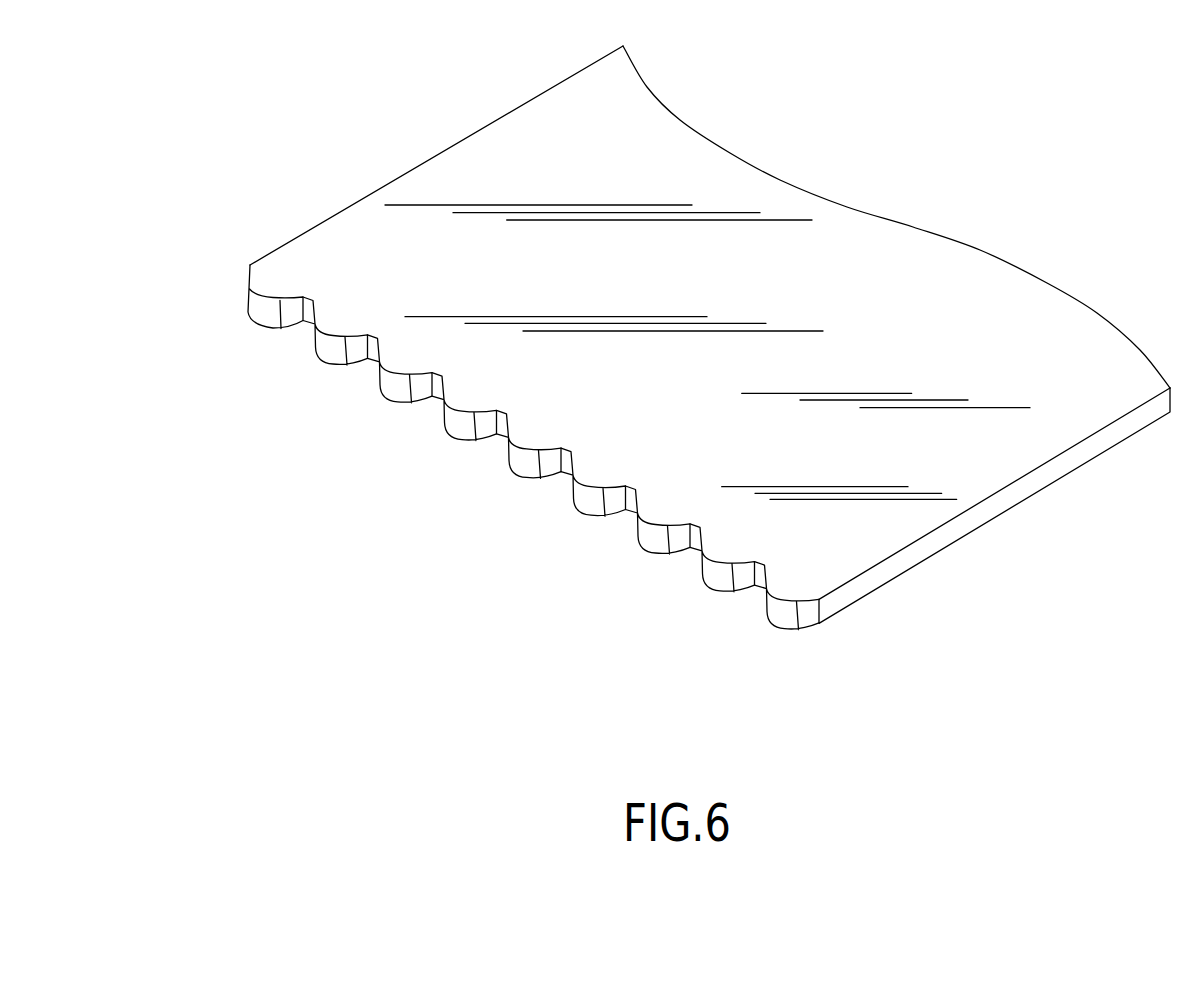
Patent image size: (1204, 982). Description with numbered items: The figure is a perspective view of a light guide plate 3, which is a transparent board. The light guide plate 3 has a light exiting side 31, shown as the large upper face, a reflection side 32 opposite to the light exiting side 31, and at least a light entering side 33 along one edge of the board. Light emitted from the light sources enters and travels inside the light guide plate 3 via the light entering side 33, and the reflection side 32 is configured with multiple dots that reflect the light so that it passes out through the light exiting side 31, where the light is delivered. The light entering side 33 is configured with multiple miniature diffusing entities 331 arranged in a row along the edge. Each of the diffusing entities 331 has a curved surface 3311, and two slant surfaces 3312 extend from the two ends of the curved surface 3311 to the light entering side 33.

The light guide plate 3 is at (382, 134).
The light exiting side 31 is at (347, 237).
The reflection side 32 is at (1005, 510).
The light entering side 33 is at (533, 451).
The diffusing entities 331 is at (518, 480).
The curved surface 3311 is at (586, 500).
The slant surfaces 3312 is at (548, 465).